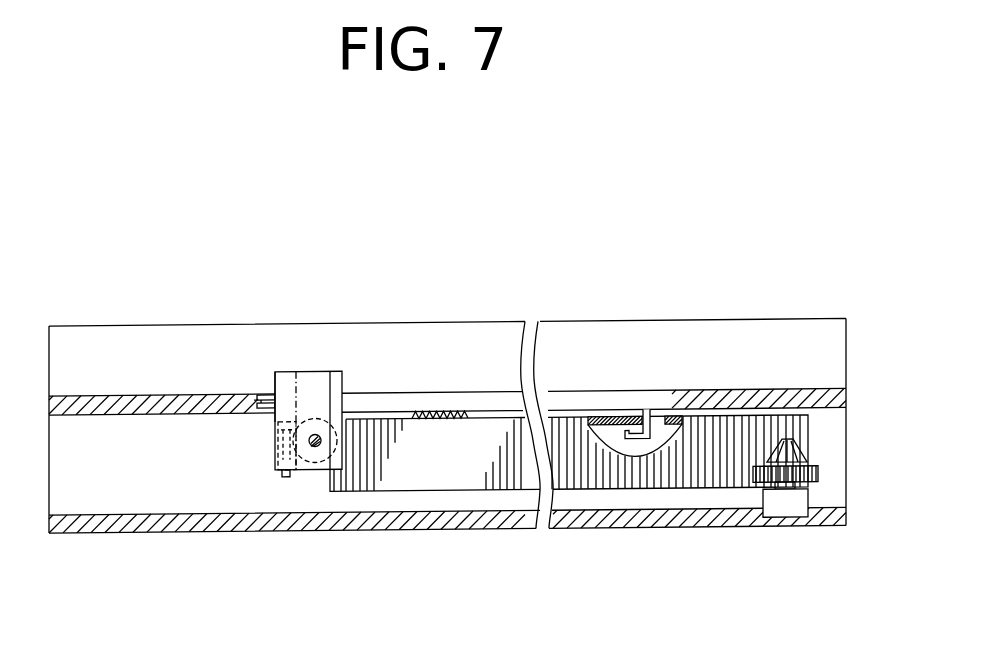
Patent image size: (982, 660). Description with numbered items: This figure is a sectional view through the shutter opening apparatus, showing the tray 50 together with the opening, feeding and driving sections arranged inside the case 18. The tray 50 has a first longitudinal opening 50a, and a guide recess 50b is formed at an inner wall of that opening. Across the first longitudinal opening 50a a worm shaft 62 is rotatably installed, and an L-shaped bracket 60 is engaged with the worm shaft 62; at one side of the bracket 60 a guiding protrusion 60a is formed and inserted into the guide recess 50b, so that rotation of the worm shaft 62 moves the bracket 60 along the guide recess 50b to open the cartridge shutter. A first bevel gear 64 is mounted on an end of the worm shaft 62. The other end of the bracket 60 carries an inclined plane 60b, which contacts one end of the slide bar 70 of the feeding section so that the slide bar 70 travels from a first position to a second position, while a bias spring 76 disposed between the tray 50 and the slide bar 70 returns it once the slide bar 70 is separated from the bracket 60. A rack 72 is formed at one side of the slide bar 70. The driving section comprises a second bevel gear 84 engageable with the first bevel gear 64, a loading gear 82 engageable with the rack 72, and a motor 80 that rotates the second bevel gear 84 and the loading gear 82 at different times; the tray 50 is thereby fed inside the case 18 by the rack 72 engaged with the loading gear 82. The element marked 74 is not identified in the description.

The case 18 is at (143, 532).
The tray 50 is at (175, 400).
The first longitudinal opening 50a is at (489, 396).
The guide recess 50b is at (262, 398).
The bracket 60 is at (318, 378).
The guiding protrusion 60a is at (266, 393).
The inclined plane 60b is at (296, 372).
The worm shaft 62 is at (313, 449).
The first bevel gear 64 is at (296, 472).
The slide bar 70 is at (660, 487).
The rack 72 is at (594, 478).
The foot 74 is at (284, 479).
The bias spring 76 is at (441, 410).
The motor 80 is at (808, 500).
The loading gear 82 is at (820, 472).
The second bevel gear 84 is at (795, 446).